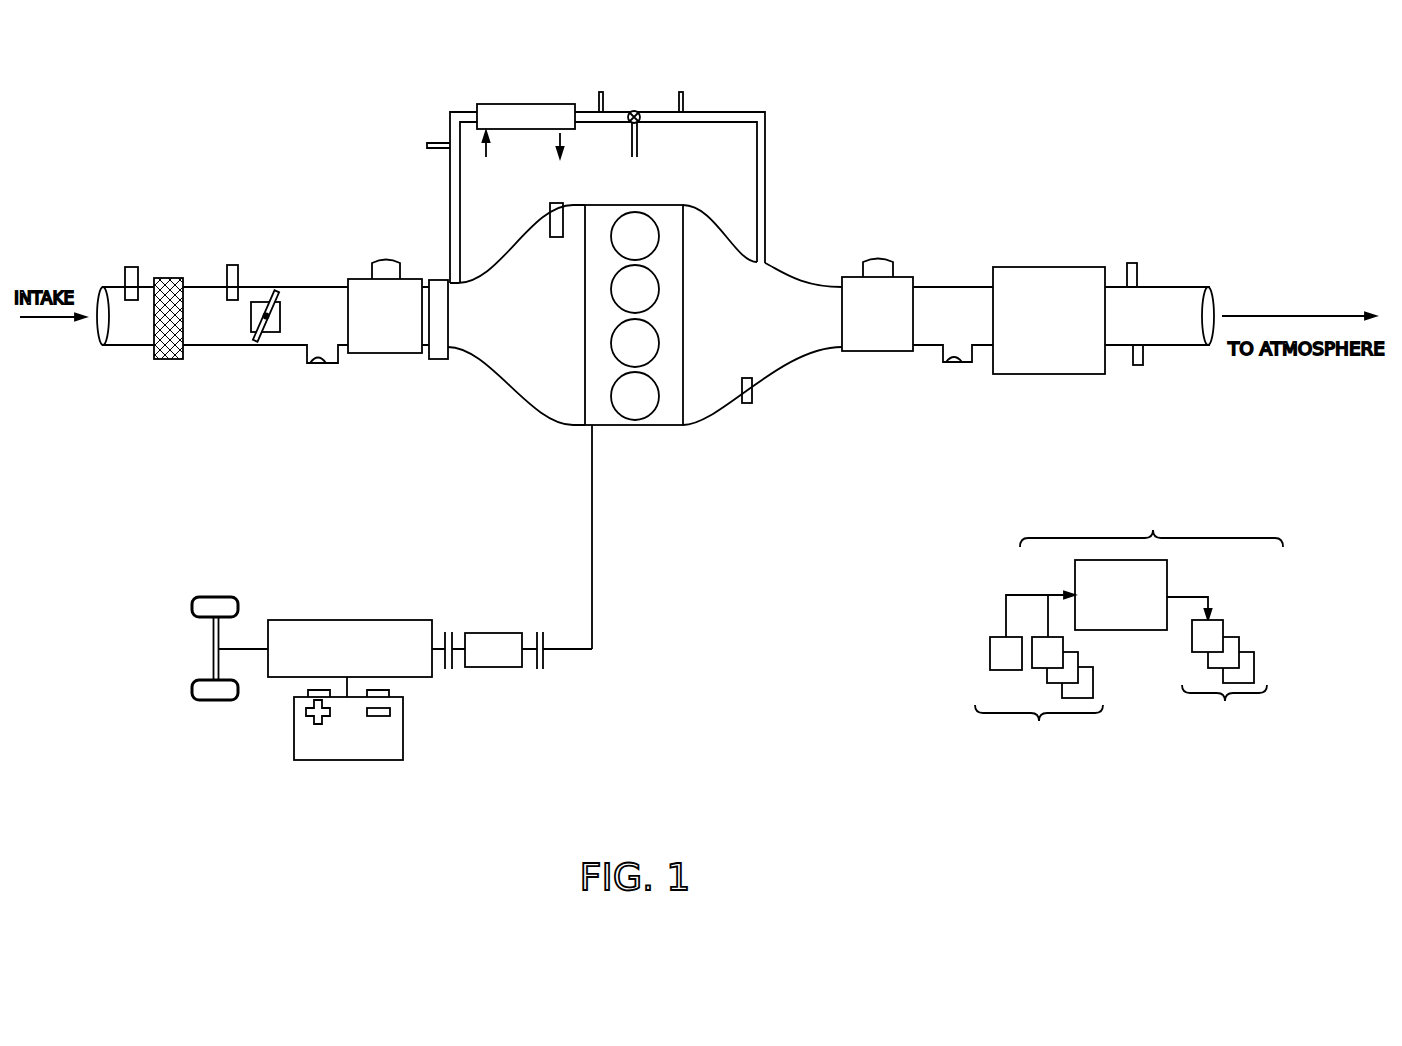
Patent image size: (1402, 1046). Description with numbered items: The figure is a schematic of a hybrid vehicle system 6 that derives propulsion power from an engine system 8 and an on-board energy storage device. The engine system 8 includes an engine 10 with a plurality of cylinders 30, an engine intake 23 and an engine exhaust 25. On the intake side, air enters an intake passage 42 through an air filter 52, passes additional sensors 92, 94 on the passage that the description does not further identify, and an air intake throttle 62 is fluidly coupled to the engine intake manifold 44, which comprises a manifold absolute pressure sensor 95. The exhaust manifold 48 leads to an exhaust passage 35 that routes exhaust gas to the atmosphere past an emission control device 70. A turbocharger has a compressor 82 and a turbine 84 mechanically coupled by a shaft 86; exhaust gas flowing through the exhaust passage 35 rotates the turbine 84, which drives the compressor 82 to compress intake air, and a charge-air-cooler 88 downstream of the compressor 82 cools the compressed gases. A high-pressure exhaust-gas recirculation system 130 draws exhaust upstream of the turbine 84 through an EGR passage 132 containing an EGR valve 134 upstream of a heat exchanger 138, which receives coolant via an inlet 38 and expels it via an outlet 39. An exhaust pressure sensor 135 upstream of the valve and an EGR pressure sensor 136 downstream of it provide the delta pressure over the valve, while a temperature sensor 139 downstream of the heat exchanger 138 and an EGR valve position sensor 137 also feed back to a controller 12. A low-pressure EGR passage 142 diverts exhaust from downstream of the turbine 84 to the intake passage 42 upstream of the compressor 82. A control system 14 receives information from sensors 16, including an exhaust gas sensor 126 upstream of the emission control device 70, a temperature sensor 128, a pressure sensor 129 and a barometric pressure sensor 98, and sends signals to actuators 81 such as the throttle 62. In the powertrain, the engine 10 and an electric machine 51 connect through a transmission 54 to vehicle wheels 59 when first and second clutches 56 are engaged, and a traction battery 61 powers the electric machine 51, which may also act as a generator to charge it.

The hybrid vehicle system 6 is at (118, 182).
The engine system 8 is at (1245, 178).
The engine 10 is at (683, 297).
The controller 12 is at (1121, 595).
The control system 14 is at (1151, 516).
The sensors 16 is at (1039, 683).
The engine intake 23 is at (477, 430).
The engine exhaust 25 is at (830, 430).
The cylinders 30 is at (659, 228).
The exhaust passage 35 is at (1190, 285).
The inlet 38 is at (487, 152).
The outlet 39 is at (561, 140).
The intake passage 42 is at (130, 346).
The engine intake manifold 44 is at (530, 327).
The exhaust manifold 48 is at (752, 327).
The electric machine 51 is at (490, 667).
The air filter 52 is at (168, 278).
The transmission 54 is at (291, 677).
The clutches 56 is at (455, 633).
The vehicle wheels 59 is at (212, 700).
The traction battery 61 is at (352, 760).
The air intake throttle 62 is at (280, 322).
The emission control device 70 is at (1037, 267).
The actuators 81 is at (1217, 676).
The compressor 82 is at (375, 328).
The turbine 84 is at (867, 328).
The shaft 86 is at (381, 261).
The charge-air-cooler 88 is at (442, 280).
The mass air flow sensor 92 is at (133, 267).
The pressure sensor 94 is at (232, 265).
The manifold absolute pressure sensor 95 is at (556, 203).
The barometric pressure sensor 98 is at (996, 665).
The exhaust gas sensor 126 is at (752, 380).
The temperature sensor 128 is at (1140, 365).
The pressure sensor 129 is at (1137, 265).
The exhaust-gas recirculation system 130 is at (803, 58).
The EGR passage 132 is at (765, 112).
The EGR valve 134 is at (636, 111).
The exhaust pressure sensor 135 is at (683, 92).
The EGR pressure sensor 136 is at (601, 92).
The EGR valve position sensor 137 is at (637, 150).
The heat exchanger 138 is at (520, 104).
The temperature sensor 139 is at (430, 143).
The low-pressure EGR passage 142 is at (335, 365).